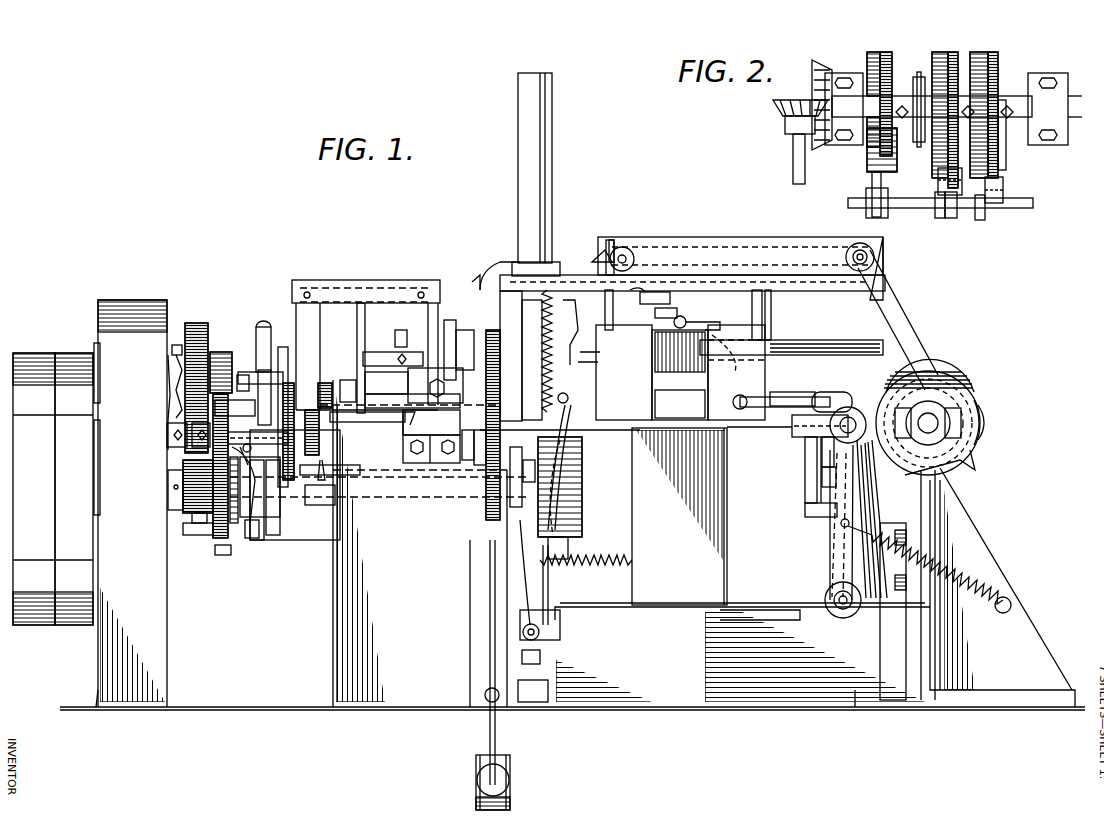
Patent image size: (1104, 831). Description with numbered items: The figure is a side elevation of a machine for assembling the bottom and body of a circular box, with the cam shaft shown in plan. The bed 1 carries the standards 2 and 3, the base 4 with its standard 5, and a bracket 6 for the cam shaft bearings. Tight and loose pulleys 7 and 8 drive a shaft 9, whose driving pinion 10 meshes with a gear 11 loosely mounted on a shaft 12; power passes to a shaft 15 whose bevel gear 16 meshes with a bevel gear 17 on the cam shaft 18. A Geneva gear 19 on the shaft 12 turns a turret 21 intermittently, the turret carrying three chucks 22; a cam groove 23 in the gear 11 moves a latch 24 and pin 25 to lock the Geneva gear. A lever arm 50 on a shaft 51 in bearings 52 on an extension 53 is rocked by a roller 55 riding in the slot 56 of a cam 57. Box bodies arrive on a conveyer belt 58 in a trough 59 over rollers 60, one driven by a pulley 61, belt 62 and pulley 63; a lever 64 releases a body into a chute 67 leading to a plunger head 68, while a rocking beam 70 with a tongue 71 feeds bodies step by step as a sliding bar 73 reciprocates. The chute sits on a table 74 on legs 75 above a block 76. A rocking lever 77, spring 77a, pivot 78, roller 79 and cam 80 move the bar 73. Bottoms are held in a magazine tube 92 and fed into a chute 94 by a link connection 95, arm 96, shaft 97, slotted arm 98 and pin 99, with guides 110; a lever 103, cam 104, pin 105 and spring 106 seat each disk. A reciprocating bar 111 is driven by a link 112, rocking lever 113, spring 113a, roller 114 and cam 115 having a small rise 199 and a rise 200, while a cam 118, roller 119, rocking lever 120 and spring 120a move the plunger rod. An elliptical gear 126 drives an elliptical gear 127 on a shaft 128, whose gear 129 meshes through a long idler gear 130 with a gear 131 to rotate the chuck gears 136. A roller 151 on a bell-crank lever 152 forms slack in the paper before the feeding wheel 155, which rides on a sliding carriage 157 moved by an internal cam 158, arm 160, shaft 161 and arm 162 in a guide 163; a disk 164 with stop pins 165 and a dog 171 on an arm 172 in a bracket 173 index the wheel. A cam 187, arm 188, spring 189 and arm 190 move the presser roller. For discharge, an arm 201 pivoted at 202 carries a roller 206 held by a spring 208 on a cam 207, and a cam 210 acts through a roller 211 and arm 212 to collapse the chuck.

In FIG. 1, the bed 1 is at (248, 707).
In FIG. 1, the standard 2 is at (131, 503).
In FIG. 1, the standard 3 is at (420, 543).
In FIG. 1, the base 4 is at (742, 652).
In FIG. 1, the standard 5 is at (679, 516).
In FIG. 1, the bracket 6 is at (1002, 587).
In FIG. 1, the tight pulley 7 is at (53, 489).
In FIG. 1, the loose pulley 8 is at (34, 489).
In FIG. 1, the shaft 9 is at (315, 500).
In FIG. 1, the driving pinion 10 is at (190, 522).
In FIG. 1, the gear 11 is at (194, 323).
In FIG. 1, the shaft 12 is at (258, 409).
In FIG. 1, the shaft 15 is at (800, 466).
In FIG. 2, the shaft 15 is at (793, 178).
In FIG. 1, the bevel gear 16 is at (945, 355).
In FIG. 2, the bevel gear 16 is at (780, 128).
In FIG. 1, the bevel gear 17 is at (950, 370).
In FIG. 2, the bevel gear 17 is at (812, 102).
In FIG. 1, the cam shaft 18 is at (932, 422).
In FIG. 2, the cam shaft 18 is at (1068, 90).
In FIG. 1, the Geneva gear 19 is at (96, 345).
In FIG. 1, the turret 21 is at (448, 320).
In FIG. 1, the chucks 22 is at (463, 330).
In FIG. 1, the cam groove 23 is at (166, 393).
In FIG. 1, the latch 24 is at (172, 372).
In FIG. 1, the pin 25 is at (172, 350).
In FIG. 1, the lever arm 50 is at (262, 327).
In FIG. 1, the shaft 51 is at (255, 375).
In FIG. 1, the bearings 52 is at (270, 368).
In FIG. 1, the extension 53 is at (282, 347).
In FIG. 1, the roller 55 is at (278, 488).
In FIG. 1, the slot 56 is at (262, 540).
In FIG. 1, the cam 57 is at (287, 520).
In FIG. 1, the conveyer belt 58 is at (707, 245).
In FIG. 1, the trough 59 is at (747, 263).
In FIG. 1, the rollers 60 is at (626, 247).
In FIG. 1, the pulley 61 is at (876, 255).
In FIG. 1, the belt 62 is at (888, 304).
In FIG. 1, the pulley 63 is at (985, 385).
In FIG. 2, the pulley 63 is at (926, 88).
In FIG. 1, the cam actuated lever 64 is at (611, 240).
In FIG. 1, the chute 67 is at (600, 258).
In FIG. 1, the plunger head 68 is at (540, 358).
In FIG. 1, the rocking beam 70 is at (581, 332).
In FIG. 1, the tongue 71 is at (618, 314).
In FIG. 1, the sliding bar 73 is at (791, 349).
In FIG. 1, the table 74 is at (760, 290).
In FIG. 1, the legs 75 is at (775, 314).
In FIG. 1, the block 76 is at (680, 375).
In FIG. 1, the rocking lever 77 is at (875, 400).
In FIG. 2, the rocking lever 77 is at (872, 183).
In FIG. 2, the spring 77a is at (867, 57).
In FIG. 1, the pivot 78 is at (852, 605).
In FIG. 2, the pivot 78 is at (900, 198).
In FIG. 1, the roller 79 is at (797, 388).
In FIG. 2, the roller 79 is at (867, 160).
In FIG. 1, the cam 80 is at (940, 340).
In FIG. 2, the cam 80 is at (892, 101).
In FIG. 1, the magazine tube 92 is at (518, 124).
In FIG. 1, the chute 94 is at (692, 348).
In FIG. 1, the link connection 95 is at (650, 290).
In FIG. 1, the arm 96 is at (670, 316).
In FIG. 1, the shaft 97 is at (684, 318).
In FIG. 1, the slotted arm 98 is at (725, 328).
In FIG. 1, the pin 99 is at (736, 372).
In FIG. 1, the lever 103 is at (565, 440).
In FIG. 1, the cam 104 is at (570, 425).
In FIG. 1, the pin 105 is at (568, 403).
In FIG. 1, the spring 106 is at (542, 334).
In FIG. 1, the guides 110 is at (496, 271).
In FIG. 1, the reciprocating bar 111 is at (681, 403).
In FIG. 1, the link 112 is at (778, 397).
In FIG. 1, the rocking lever 113 is at (845, 570).
In FIG. 2, the rocking lever 113 is at (982, 220).
In FIG. 1, the spring 113a is at (860, 548).
In FIG. 2, the spring 113a is at (998, 160).
In FIG. 1, the roller 114 is at (820, 445).
In FIG. 2, the roller 114 is at (1003, 186).
In FIG. 1, the cam 115 is at (978, 418).
In FIG. 2, the cam 115 is at (994, 72).
In FIG. 1, the cam 118 is at (984, 428).
In FIG. 2, the cam 118 is at (940, 155).
In FIG. 1, the roller 119 is at (840, 450).
In FIG. 2, the roller 119 is at (952, 218).
In FIG. 1, the rocking lever 120 is at (845, 465).
In FIG. 2, the rocking lever 120 is at (938, 220).
In FIG. 2, the spring 120a is at (940, 188).
In FIG. 1, the elliptical gear 126 is at (222, 556).
In FIG. 1, the elliptical gear 127 is at (221, 352).
In FIG. 1, the shaft 128 is at (180, 450).
In FIG. 1, the gear 129 is at (335, 505).
In FIG. 1, the long idler gear 130 is at (310, 410).
In FIG. 1, the gear 131 is at (326, 383).
In FIG. 1, the gears 136 is at (395, 340).
In FIG. 1, the roller 151 is at (476, 802).
In FIG. 1, the bell-crank lever 152 is at (490, 628).
In FIG. 1, the feeding wheel 155 is at (510, 470).
In FIG. 1, the sliding carriage 157 is at (408, 420).
In FIG. 1, the internal cam 158 is at (301, 431).
In FIG. 1, the arm 160 is at (293, 280).
In FIG. 1, the shaft 161 is at (326, 280).
In FIG. 1, the arm 162 is at (420, 303).
In FIG. 1, the guide 163 is at (412, 428).
In FIG. 1, the disk 164 is at (480, 450).
In FIG. 1, the stop pins 165 is at (470, 440).
In FIG. 1, the dog 171 is at (500, 385).
In FIG. 1, the arm 172 is at (412, 390).
In FIG. 1, the bracket 173 is at (393, 354).
In FIG. 1, the cam 187 is at (335, 475).
In FIG. 1, the arm 188 is at (330, 455).
In FIG. 1, the spring 189 is at (347, 381).
In FIG. 1, the arm 190 is at (367, 419).
In FIG. 1, the small rise 199 is at (975, 466).
In FIG. 1, the rise 200 is at (887, 519).
In FIG. 1, the arm 201 is at (548, 582).
In FIG. 1, the pivot 202 is at (540, 632).
In FIG. 1, the roller 206 is at (582, 497).
In FIG. 1, the cam 207 is at (582, 515).
In FIG. 1, the spring 208 is at (614, 558).
In FIG. 1, the cam 210 is at (250, 545).
In FIG. 1, the roller 211 is at (235, 544).
In FIG. 1, the arm 212 is at (212, 520).